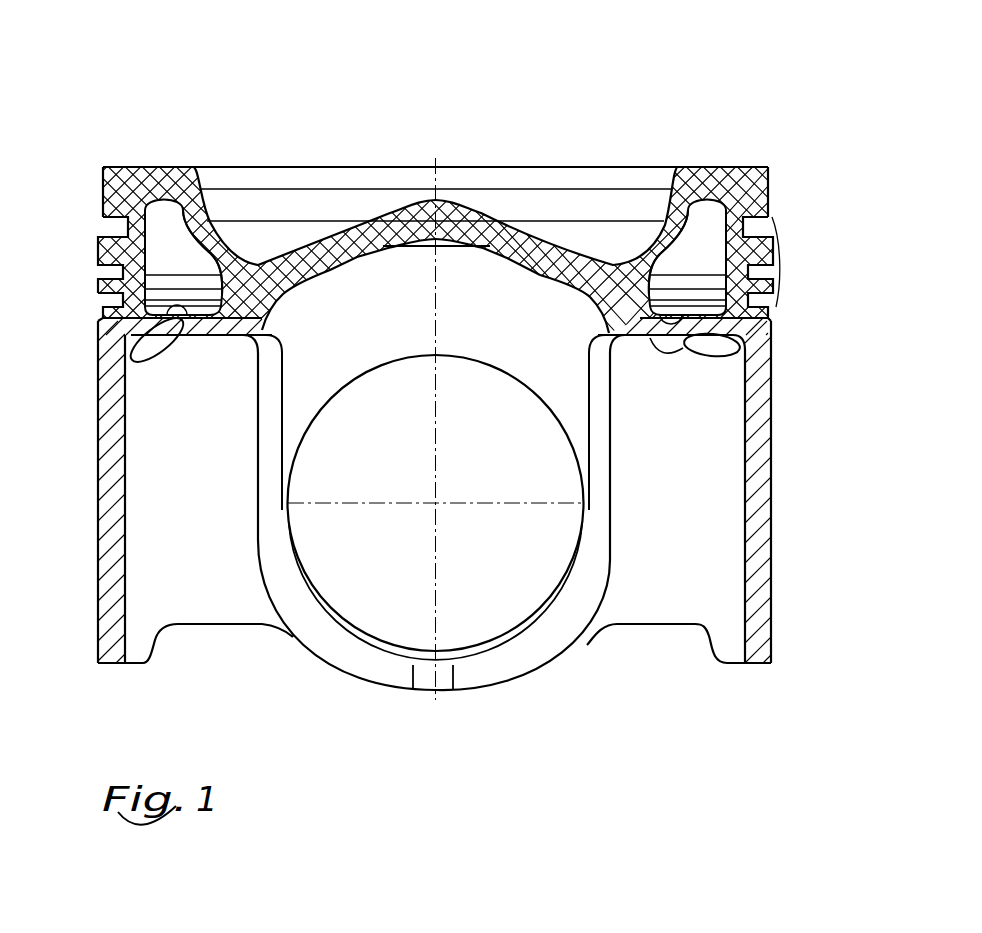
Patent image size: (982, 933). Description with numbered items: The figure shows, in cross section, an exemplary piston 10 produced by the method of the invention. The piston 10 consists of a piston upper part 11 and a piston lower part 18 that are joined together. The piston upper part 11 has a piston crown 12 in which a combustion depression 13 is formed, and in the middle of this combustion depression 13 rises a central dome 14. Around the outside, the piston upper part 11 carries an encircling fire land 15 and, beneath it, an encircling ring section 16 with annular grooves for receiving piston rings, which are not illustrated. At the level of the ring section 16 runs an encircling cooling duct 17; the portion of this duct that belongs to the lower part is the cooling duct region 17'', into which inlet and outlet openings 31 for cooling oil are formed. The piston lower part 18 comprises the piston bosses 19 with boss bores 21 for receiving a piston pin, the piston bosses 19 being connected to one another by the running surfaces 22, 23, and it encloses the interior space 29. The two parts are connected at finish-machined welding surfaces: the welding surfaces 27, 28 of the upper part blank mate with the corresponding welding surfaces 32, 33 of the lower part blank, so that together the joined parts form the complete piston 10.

The piston 10 is at (762, 67).
The piston upper part 11 is at (778, 210).
The piston crown 12 is at (718, 158).
The combustion depression 13 is at (598, 230).
The central dome 14 is at (462, 200).
The fire land 15 is at (770, 177).
The ring section 16 is at (787, 257).
The cooling duct 17 is at (435, 208).
The cooling duct region 17'' is at (385, 362).
The piston lower part 18 is at (781, 390).
The piston bosses 19 is at (557, 660).
The boss bores 21 is at (493, 607).
The running surface 22 is at (97, 497).
The running surface 23 is at (771, 503).
The welding surface 27 is at (117, 303).
The welding surface 28 is at (246, 313).
The interior space 29 is at (202, 383).
The inlet and outlet openings 31 is at (770, 318).
The welding surface 32 is at (103, 330).
The welding surface 33 is at (235, 323).